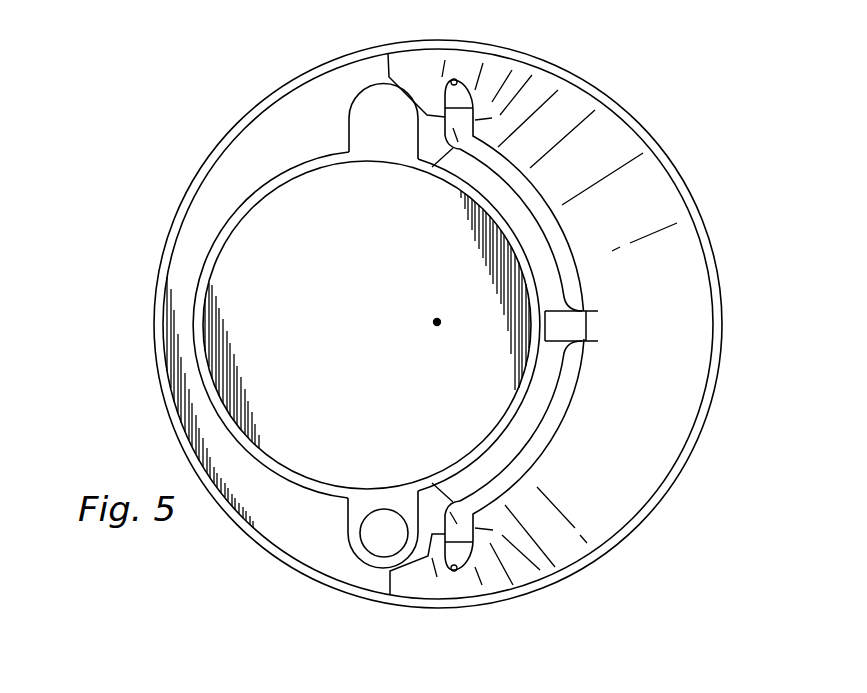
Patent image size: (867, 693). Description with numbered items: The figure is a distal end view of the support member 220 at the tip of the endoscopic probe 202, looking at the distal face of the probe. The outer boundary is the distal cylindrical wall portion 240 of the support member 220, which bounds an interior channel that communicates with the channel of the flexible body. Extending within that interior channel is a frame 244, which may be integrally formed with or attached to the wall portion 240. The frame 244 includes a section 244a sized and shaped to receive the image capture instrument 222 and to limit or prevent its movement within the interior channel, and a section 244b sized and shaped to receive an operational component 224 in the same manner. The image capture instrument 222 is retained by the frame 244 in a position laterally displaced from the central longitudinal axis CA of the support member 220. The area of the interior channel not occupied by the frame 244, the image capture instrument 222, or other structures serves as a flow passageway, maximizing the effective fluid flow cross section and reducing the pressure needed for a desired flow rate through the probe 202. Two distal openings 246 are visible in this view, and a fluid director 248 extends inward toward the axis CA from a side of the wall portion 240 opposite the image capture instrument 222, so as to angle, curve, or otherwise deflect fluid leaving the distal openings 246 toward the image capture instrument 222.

The endoscopic probe 202 is at (150, 122).
The support member 220 is at (260, 105).
The image capture instrument 222 is at (383, 341).
The operational components 224 is at (381, 540).
The distal cylindrical wall portion 240 is at (163, 322).
The frame 244 is at (205, 212).
The frame section 244a is at (175, 281).
The frame section 244b is at (352, 533).
The distal openings 246 is at (436, 165).
The fluid director 248 is at (657, 192).
The central longitudinal axis CA is at (434, 319).